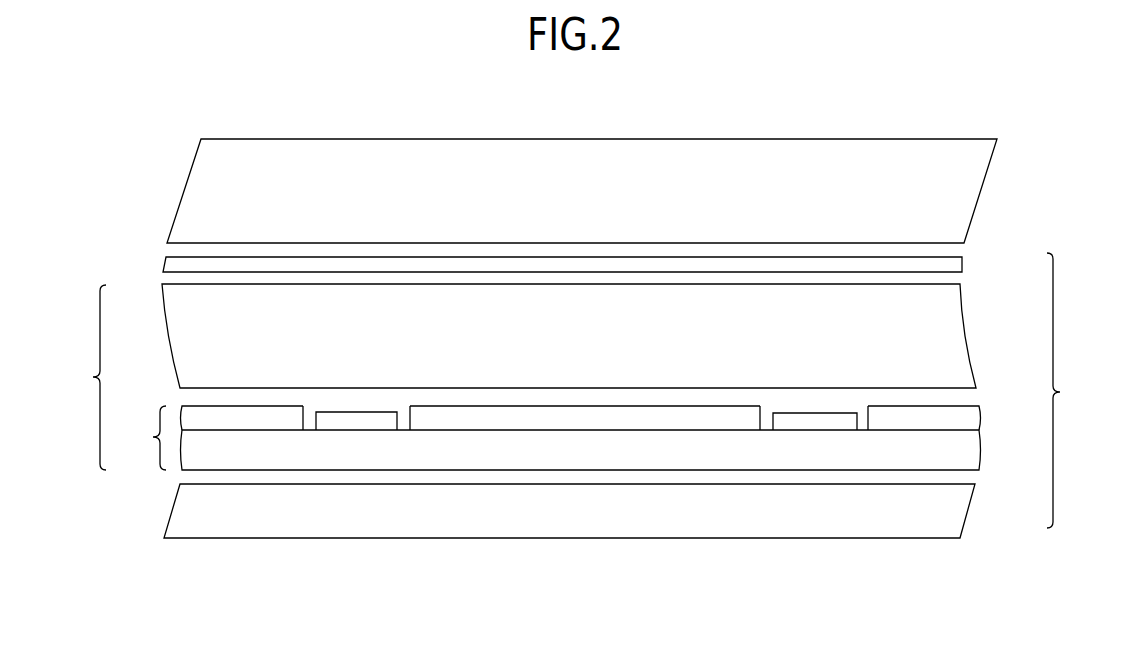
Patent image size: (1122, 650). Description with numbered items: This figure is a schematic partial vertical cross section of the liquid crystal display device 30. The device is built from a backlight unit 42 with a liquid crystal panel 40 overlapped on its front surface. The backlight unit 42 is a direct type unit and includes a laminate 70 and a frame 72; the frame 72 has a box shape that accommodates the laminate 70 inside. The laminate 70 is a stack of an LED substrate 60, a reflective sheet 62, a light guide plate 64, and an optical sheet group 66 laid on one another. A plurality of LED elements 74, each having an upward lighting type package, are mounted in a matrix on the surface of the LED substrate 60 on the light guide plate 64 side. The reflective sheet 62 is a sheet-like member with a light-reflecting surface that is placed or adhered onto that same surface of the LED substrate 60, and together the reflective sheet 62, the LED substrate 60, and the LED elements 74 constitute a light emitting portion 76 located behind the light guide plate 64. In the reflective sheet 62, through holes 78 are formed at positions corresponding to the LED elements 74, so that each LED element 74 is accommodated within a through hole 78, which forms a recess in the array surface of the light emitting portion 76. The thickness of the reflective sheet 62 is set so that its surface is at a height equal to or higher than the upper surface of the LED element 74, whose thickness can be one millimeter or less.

The liquid crystal display device 30 is at (913, 107).
The liquid crystal panel 40 is at (962, 194).
The backlight unit 42 is at (1071, 390).
The LED substrate 60 is at (970, 452).
The reflective sheet 62 is at (970, 418).
The light guide plate 64 is at (948, 341).
The optical sheet group 66 is at (950, 265).
The laminate 70 is at (82, 377).
The frame 72 is at (958, 512).
The LED element 74 is at (355, 424).
The light emitting portion 76 is at (140, 438).
The through hole 78 is at (312, 408).